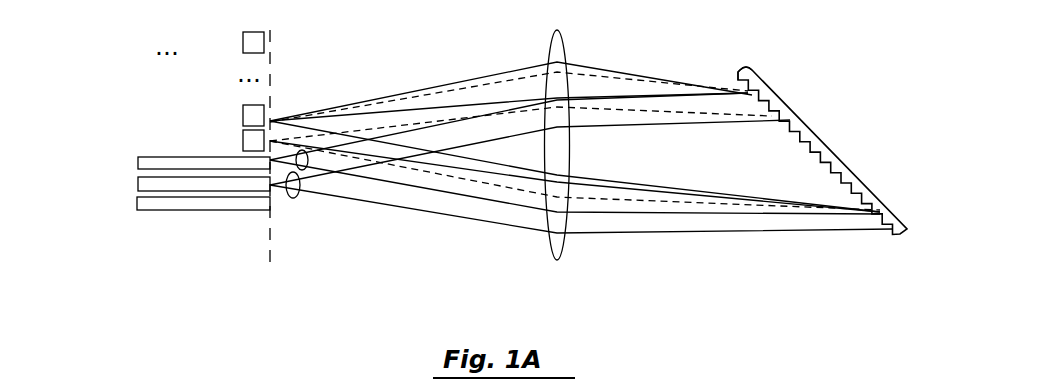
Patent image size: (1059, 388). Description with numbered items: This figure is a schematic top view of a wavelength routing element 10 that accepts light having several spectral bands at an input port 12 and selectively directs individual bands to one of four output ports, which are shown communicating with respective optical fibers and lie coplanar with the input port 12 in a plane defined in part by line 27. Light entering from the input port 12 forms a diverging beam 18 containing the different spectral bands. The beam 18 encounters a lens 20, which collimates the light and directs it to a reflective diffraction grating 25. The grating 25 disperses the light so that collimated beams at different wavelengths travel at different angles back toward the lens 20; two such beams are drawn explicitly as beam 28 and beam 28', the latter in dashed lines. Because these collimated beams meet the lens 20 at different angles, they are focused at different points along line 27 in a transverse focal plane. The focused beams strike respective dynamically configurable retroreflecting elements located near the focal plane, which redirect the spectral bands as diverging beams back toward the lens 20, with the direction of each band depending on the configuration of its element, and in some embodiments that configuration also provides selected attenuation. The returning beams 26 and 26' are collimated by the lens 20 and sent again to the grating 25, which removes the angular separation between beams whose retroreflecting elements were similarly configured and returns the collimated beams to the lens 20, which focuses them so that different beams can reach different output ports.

The wavelength routing element 10 is at (300, 240).
The input port 12 is at (138, 183).
The diverging beam 18 is at (296, 196).
The lens 20 is at (548, 233).
The reflective diffraction grating 25 is at (749, 67).
The returning beam 26 is at (581, 131).
The returning beam 26' is at (575, 107).
The line 27 is at (270, 232).
The collimated beam 28 is at (798, 150).
The collimated beam 28' is at (521, 140).